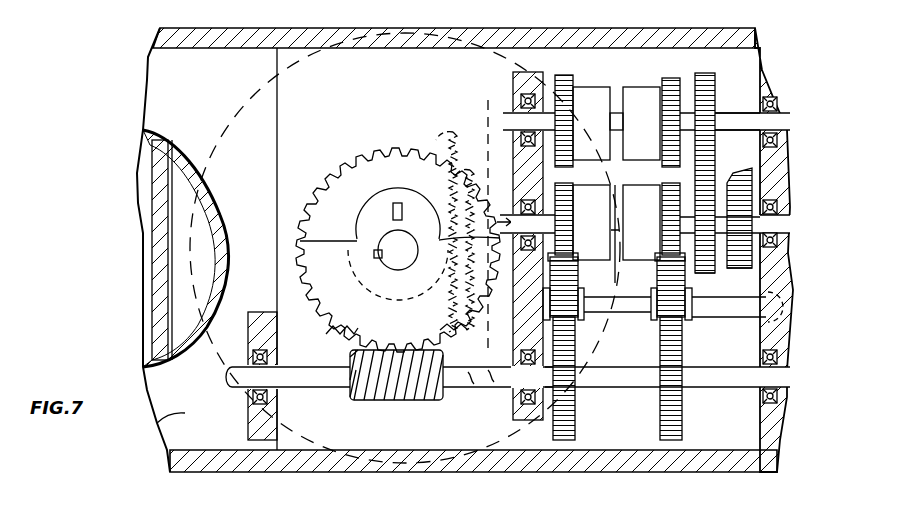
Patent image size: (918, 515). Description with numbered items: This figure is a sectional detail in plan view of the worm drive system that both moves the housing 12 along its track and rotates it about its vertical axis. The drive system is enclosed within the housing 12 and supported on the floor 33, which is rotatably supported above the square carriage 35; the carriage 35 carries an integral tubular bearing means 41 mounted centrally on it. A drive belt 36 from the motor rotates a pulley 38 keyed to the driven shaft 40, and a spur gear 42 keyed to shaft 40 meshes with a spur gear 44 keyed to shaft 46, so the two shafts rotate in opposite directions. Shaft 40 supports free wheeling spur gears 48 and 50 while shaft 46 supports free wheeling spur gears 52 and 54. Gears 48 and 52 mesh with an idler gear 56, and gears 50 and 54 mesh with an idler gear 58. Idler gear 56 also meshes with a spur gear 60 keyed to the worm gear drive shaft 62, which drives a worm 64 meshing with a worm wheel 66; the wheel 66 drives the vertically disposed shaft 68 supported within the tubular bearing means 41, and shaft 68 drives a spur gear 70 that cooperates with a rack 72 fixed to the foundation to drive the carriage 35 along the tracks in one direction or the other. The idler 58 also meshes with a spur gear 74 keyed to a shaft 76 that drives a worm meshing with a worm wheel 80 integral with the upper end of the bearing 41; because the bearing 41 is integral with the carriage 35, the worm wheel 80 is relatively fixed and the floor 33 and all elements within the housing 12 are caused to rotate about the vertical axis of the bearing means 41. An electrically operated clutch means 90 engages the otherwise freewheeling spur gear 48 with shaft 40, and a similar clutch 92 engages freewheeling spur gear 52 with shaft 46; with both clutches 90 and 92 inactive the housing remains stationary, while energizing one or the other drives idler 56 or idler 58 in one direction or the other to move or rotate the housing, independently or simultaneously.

The housing 12 is at (153, 55).
The floor 33 is at (158, 422).
The carriage 35 is at (157, 237).
The drive belt 36 is at (743, 168).
The pulley 38 is at (746, 270).
The driven shaft 40 is at (712, 274).
The tubular bearing means 41 is at (372, 222).
The spur gear 42 is at (717, 186).
The spur gear 44 is at (712, 83).
The shaft 46 is at (738, 120).
The spur gear 48 is at (668, 190).
The spur gear 50 is at (567, 190).
The spur gear 52 is at (671, 86).
The spur gear 54 is at (563, 82).
The idler gear 56 is at (659, 280).
The idler gear 58 is at (576, 283).
The spur gear 60 is at (681, 414).
The worm gear drive shaft 62 is at (318, 373).
The worm 64 is at (397, 398).
The worm wheel 66 is at (350, 330).
The shaft 68 is at (380, 272).
The spur gear 70 is at (430, 312).
The rack 72 is at (433, 157).
The spur gear 74 is at (566, 406).
The shaft 76 is at (490, 380).
The worm wheel 80 is at (354, 156).
The clutch means 90 is at (650, 253).
The clutch 92 is at (650, 151).